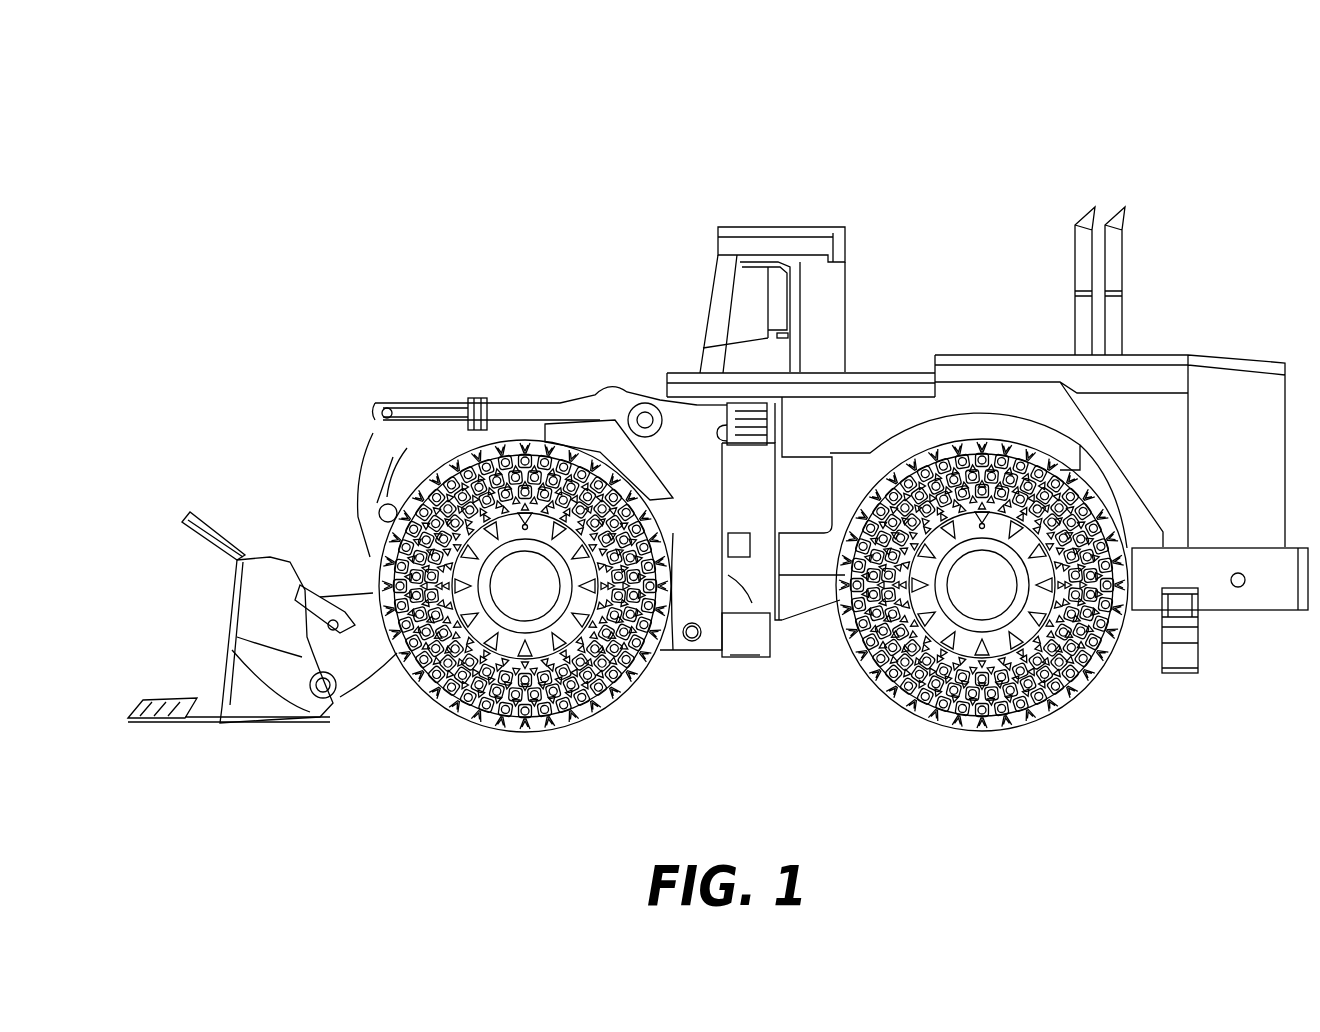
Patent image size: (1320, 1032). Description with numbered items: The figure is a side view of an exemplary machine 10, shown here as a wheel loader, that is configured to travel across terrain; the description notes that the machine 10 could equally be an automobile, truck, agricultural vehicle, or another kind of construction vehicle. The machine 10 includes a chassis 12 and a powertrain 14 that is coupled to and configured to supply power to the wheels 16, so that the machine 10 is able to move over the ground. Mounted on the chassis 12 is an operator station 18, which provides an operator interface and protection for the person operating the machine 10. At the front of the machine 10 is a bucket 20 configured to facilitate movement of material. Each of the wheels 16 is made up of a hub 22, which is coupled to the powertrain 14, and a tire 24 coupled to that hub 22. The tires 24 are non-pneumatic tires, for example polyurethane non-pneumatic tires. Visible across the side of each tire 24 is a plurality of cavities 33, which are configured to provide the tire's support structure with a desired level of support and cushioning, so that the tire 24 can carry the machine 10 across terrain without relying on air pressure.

The machine 10 is at (1150, 157).
The chassis 12 is at (747, 495).
The powertrain 14 is at (1135, 383).
The wheels 16 is at (408, 738).
The operator station 18 is at (822, 232).
The bucket 20 is at (196, 512).
The hub 22 is at (538, 528).
The tire 24 is at (457, 498).
The cavities 33 is at (455, 705).